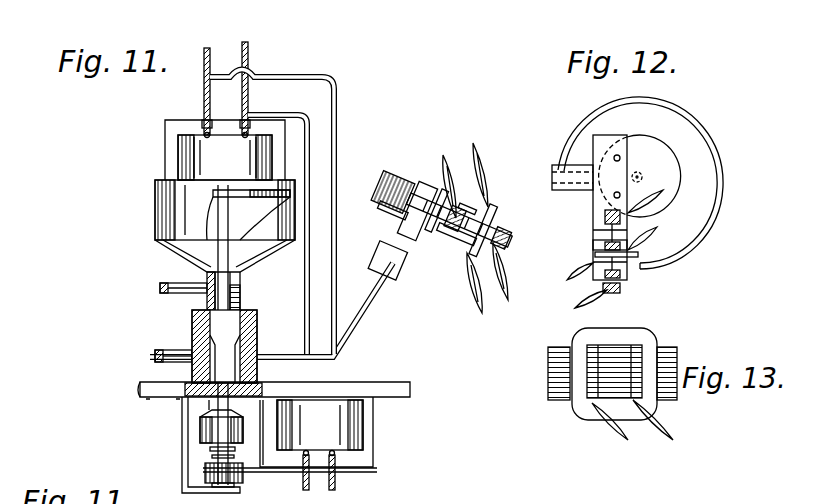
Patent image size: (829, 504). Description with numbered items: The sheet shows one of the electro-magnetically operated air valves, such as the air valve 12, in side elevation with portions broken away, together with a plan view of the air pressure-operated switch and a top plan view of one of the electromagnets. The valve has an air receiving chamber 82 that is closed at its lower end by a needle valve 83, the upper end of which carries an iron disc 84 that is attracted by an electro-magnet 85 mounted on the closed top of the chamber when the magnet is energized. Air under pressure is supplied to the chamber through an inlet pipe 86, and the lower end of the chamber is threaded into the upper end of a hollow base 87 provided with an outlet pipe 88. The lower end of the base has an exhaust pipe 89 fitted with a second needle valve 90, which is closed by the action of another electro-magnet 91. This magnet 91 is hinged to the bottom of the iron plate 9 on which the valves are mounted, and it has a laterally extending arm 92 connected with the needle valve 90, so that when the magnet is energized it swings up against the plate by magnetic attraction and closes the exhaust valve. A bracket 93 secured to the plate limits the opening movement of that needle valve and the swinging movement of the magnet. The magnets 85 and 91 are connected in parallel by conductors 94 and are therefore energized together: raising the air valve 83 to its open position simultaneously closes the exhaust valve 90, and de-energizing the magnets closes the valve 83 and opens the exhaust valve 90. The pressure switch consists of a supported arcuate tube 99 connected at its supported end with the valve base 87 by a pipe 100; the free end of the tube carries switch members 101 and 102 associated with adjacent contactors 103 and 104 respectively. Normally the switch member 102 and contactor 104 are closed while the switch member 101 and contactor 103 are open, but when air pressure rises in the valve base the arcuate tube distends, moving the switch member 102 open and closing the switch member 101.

In FIG. 11, the plate 9 is at (373, 382).
In FIG. 11, the air valve 12 is at (160, 181).
In FIG. 11, the air receiving chamber 82 is at (157, 214).
In FIG. 11, the needle valve 83 is at (228, 283).
In FIG. 11, the iron disc 84 is at (237, 207).
In FIG. 11, the electro-magnet 85 is at (225, 157).
In FIG. 11, the inlet pipe 86 is at (159, 291).
In FIG. 11, the hollow base 87 is at (224, 346).
In FIG. 11, the outlet pipe 88 is at (165, 351).
In FIG. 11, the exhaust pipe 89 is at (217, 408).
In FIG. 11, the needle valve 90 is at (228, 412).
In FIG. 11, the electro-magnet 91 is at (320, 445).
In FIG. 13, the electro-magnet 91 is at (573, 411).
In FIG. 11, the arm 92 is at (247, 473).
In FIG. 11, the bracket 93 is at (183, 442).
In FIG. 11, the conductors 94 is at (246, 50).
In FIG. 11, the arcuate tube 99 is at (432, 233).
In FIG. 12, the arcuate tube 99 is at (572, 132).
In FIG. 11, the pipe 100 is at (367, 296).
In FIG. 12, the pipe 100 is at (624, 221).
In FIG. 11, the switch member 101 is at (488, 215).
In FIG. 12, the switch member 101 is at (620, 260).
In FIG. 11, the switch member 102 is at (484, 262).
In FIG. 11, the contactor 103 is at (508, 234).
In FIG. 12, the contactor 103 is at (616, 296).
In FIG. 11, the contactor 104 is at (435, 270).
In FIG. 12, the contactor 104 is at (594, 243).